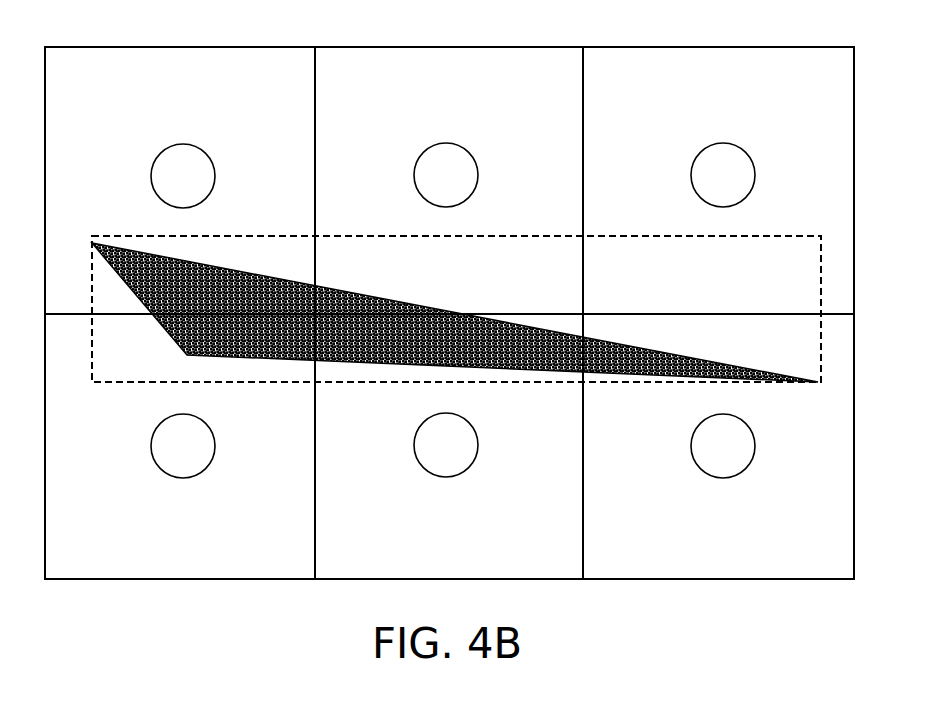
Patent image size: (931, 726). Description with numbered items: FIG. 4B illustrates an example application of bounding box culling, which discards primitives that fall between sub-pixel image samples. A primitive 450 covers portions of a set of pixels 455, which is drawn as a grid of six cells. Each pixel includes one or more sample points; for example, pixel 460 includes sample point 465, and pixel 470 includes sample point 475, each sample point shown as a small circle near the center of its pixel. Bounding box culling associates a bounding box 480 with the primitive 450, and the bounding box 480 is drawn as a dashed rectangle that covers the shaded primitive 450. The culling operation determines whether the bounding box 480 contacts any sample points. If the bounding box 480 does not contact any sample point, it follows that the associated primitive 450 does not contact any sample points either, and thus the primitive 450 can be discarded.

The set of pixels 455 is at (449, 295).
The pixel 460 is at (45, 155).
The pixel 470 is at (45, 505).
The sample point 465 is at (183, 176).
The sample point 475 is at (183, 446).
The primitive 450 is at (289, 342).
The bounding box 480 is at (598, 382).